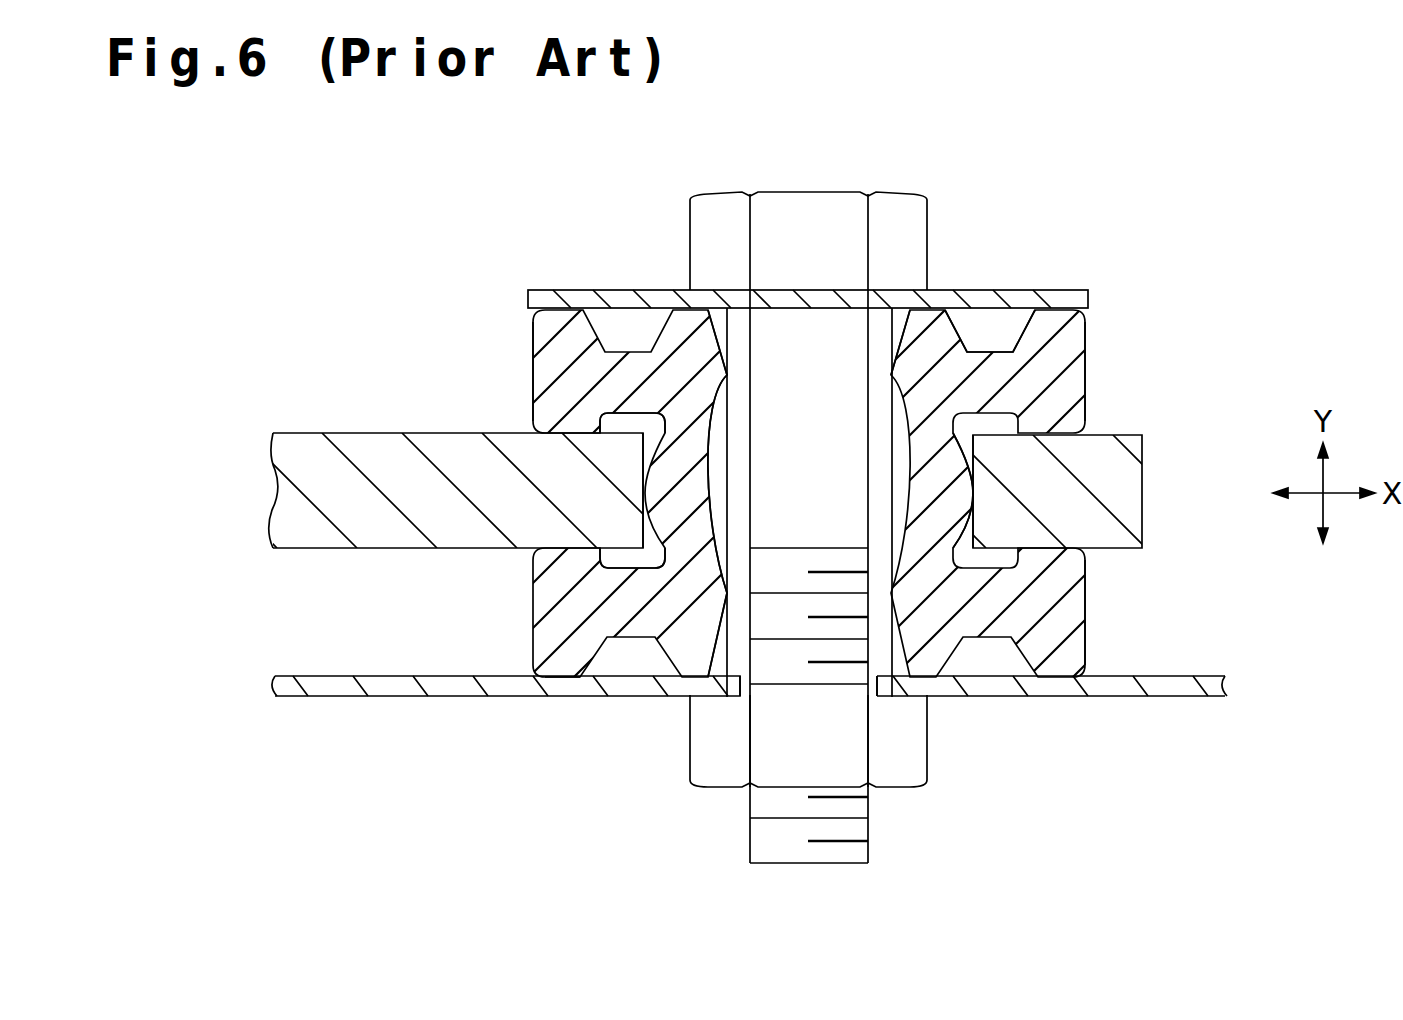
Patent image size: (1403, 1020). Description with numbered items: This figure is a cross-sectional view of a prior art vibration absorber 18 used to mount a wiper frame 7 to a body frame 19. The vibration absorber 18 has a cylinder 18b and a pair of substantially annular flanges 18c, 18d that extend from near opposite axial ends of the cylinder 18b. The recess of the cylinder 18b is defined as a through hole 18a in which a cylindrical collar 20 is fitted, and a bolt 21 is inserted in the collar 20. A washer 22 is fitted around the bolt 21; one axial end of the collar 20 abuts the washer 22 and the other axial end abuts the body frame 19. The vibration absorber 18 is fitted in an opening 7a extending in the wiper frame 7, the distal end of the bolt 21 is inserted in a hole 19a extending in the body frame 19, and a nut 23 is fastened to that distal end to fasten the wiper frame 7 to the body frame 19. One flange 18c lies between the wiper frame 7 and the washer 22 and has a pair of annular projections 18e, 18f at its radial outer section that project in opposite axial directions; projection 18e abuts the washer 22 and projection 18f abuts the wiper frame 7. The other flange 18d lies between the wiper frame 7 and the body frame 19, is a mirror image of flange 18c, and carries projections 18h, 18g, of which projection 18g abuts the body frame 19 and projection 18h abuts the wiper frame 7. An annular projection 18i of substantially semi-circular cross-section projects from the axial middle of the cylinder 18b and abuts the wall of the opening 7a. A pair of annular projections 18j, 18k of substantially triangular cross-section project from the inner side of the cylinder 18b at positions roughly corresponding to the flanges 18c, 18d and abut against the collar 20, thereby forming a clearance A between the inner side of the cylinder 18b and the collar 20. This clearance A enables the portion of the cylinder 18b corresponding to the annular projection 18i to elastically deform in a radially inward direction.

The wiper frame 7 is at (300, 432).
The opening 7a is at (643, 460).
The vibration absorber 18 is at (645, 348).
The through hole 18a is at (898, 325).
The cylinder 18b is at (935, 332).
The flange 18c is at (1078, 373).
The flange 18d is at (1077, 610).
The annular projection 18e is at (553, 318).
The annular projection 18f is at (560, 436).
The projection 18g is at (555, 675).
The projection 18h is at (555, 548).
The annular projection 18i is at (968, 480).
The annular projection 18j is at (727, 377).
The annular projection 18k is at (720, 603).
The body frame 19 is at (336, 676).
The hole 19a is at (748, 685).
The collar 20 is at (738, 330).
The bolt 21 is at (830, 208).
The washer 22 is at (1013, 298).
The nut 23 is at (910, 777).
The clearance A is at (717, 478).